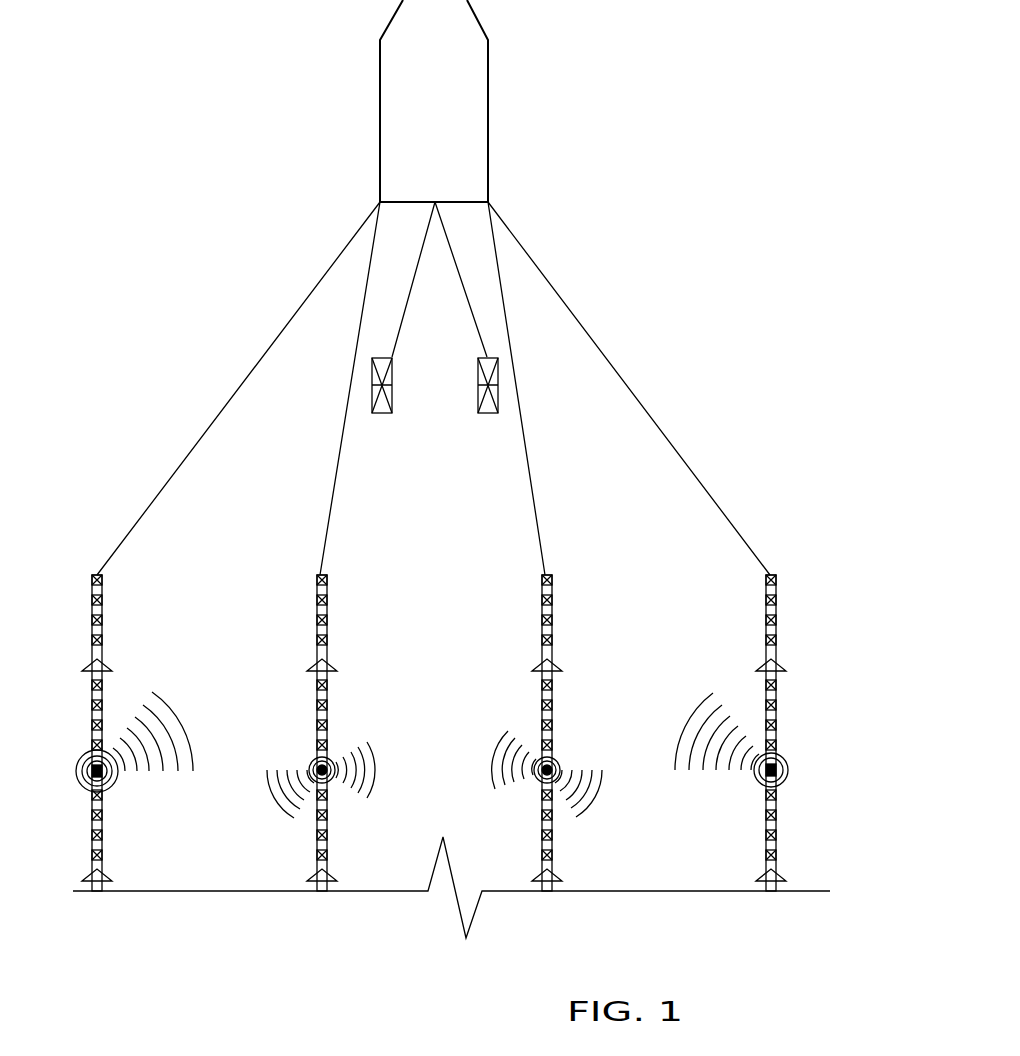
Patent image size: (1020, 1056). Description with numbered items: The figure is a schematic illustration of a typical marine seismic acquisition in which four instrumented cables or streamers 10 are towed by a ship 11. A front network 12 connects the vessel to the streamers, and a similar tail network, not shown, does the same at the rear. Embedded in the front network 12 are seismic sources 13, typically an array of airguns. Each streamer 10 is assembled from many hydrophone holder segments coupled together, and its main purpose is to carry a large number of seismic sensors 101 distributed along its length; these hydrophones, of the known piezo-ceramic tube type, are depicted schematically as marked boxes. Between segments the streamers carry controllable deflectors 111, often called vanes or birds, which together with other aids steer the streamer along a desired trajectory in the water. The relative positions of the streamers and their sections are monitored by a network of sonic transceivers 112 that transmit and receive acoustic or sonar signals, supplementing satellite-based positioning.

The streamer 10 is at (317, 580).
The ship 11 is at (427, 121).
The front network 12 is at (298, 268).
The seismic sources 13 is at (383, 386).
The seismic sensors 101 is at (102, 597).
The controllable deflectors 111 is at (102, 868).
The sonic transceivers 112 is at (92, 765).